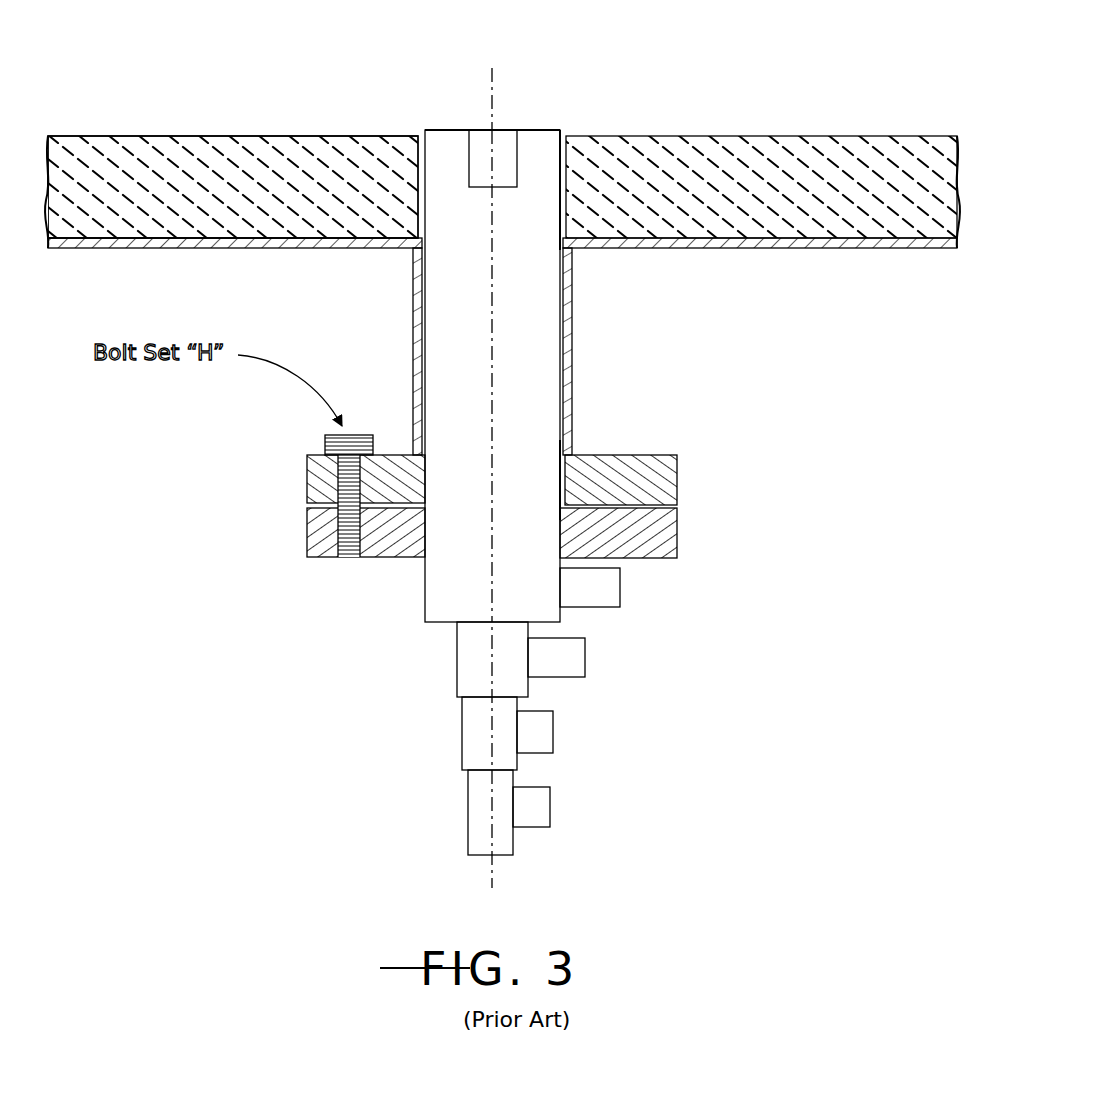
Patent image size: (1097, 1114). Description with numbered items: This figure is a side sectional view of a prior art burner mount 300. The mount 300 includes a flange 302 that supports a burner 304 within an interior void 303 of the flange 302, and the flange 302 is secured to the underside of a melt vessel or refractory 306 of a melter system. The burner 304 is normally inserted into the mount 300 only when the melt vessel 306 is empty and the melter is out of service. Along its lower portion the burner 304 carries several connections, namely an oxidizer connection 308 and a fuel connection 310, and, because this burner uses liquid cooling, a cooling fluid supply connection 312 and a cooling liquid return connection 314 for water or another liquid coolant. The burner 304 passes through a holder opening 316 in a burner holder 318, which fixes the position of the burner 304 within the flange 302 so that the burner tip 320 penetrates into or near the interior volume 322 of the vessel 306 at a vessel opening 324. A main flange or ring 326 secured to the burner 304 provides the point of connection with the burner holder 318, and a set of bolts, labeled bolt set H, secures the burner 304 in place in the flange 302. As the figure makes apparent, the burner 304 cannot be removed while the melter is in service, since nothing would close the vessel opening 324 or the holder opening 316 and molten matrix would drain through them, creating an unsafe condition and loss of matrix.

The burner mount 300 is at (745, 404).
The flange 302 is at (572, 318).
The interior void 303 is at (432, 313).
The burner 304 is at (530, 392).
The melt vessel or refractory 306 is at (660, 163).
The oxidizer connection 308 is at (620, 584).
The fuel connection 310 is at (585, 652).
The cooling fluid supply connection 312 is at (553, 730).
The cooling liquid return connection 314 is at (550, 808).
The holder opening 316 is at (556, 480).
The burner holder 318 is at (315, 478).
The burner tip 320 is at (529, 125).
The interior volume 322 is at (345, 70).
The vessel opening 324 is at (556, 172).
The main flange or ring 326 is at (690, 520).